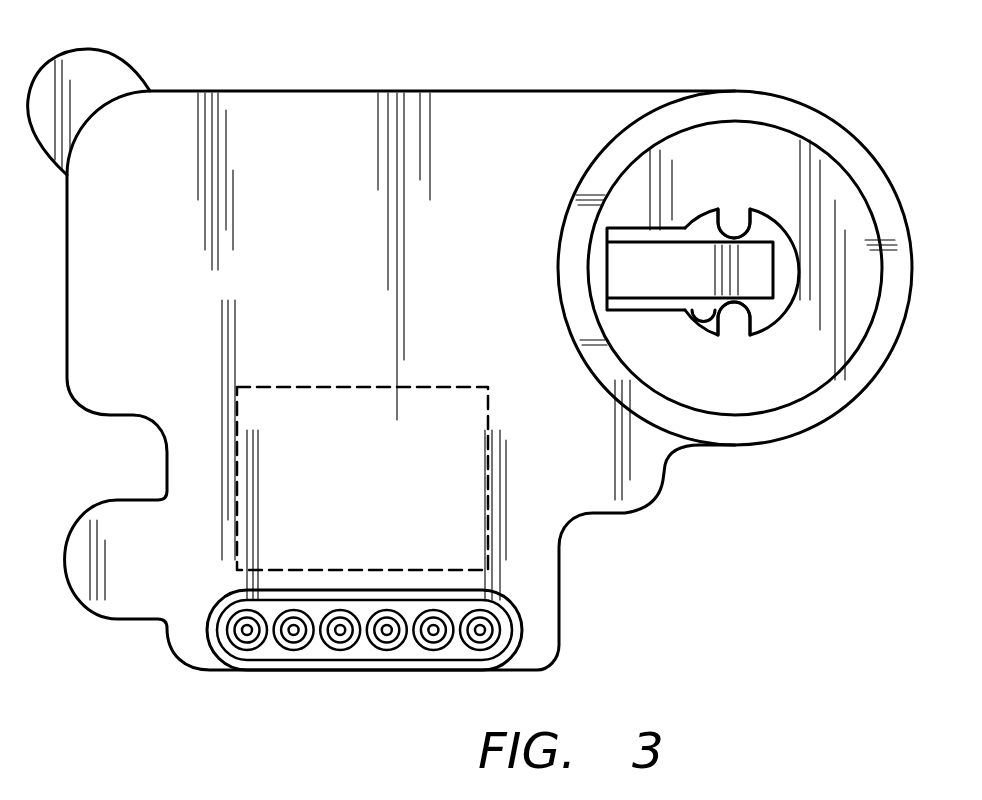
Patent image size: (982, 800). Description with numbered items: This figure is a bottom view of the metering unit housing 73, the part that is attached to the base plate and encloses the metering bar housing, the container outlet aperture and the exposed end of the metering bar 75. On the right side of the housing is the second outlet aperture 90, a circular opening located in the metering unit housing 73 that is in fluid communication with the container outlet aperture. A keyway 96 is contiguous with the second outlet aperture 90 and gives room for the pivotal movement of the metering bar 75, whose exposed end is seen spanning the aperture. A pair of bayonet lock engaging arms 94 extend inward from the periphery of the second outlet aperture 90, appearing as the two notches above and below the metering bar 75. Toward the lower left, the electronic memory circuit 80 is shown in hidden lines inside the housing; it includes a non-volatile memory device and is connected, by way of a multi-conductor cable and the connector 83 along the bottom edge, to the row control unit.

The metering unit housing 73 is at (389, 105).
The metering bar 75 is at (682, 248).
The electronic memory circuit 80 is at (322, 397).
The connector 83 is at (273, 653).
The second outlet aperture 90 is at (712, 337).
The bayonet lock engaging arms 94 is at (735, 220).
The keyway 96 is at (637, 300).